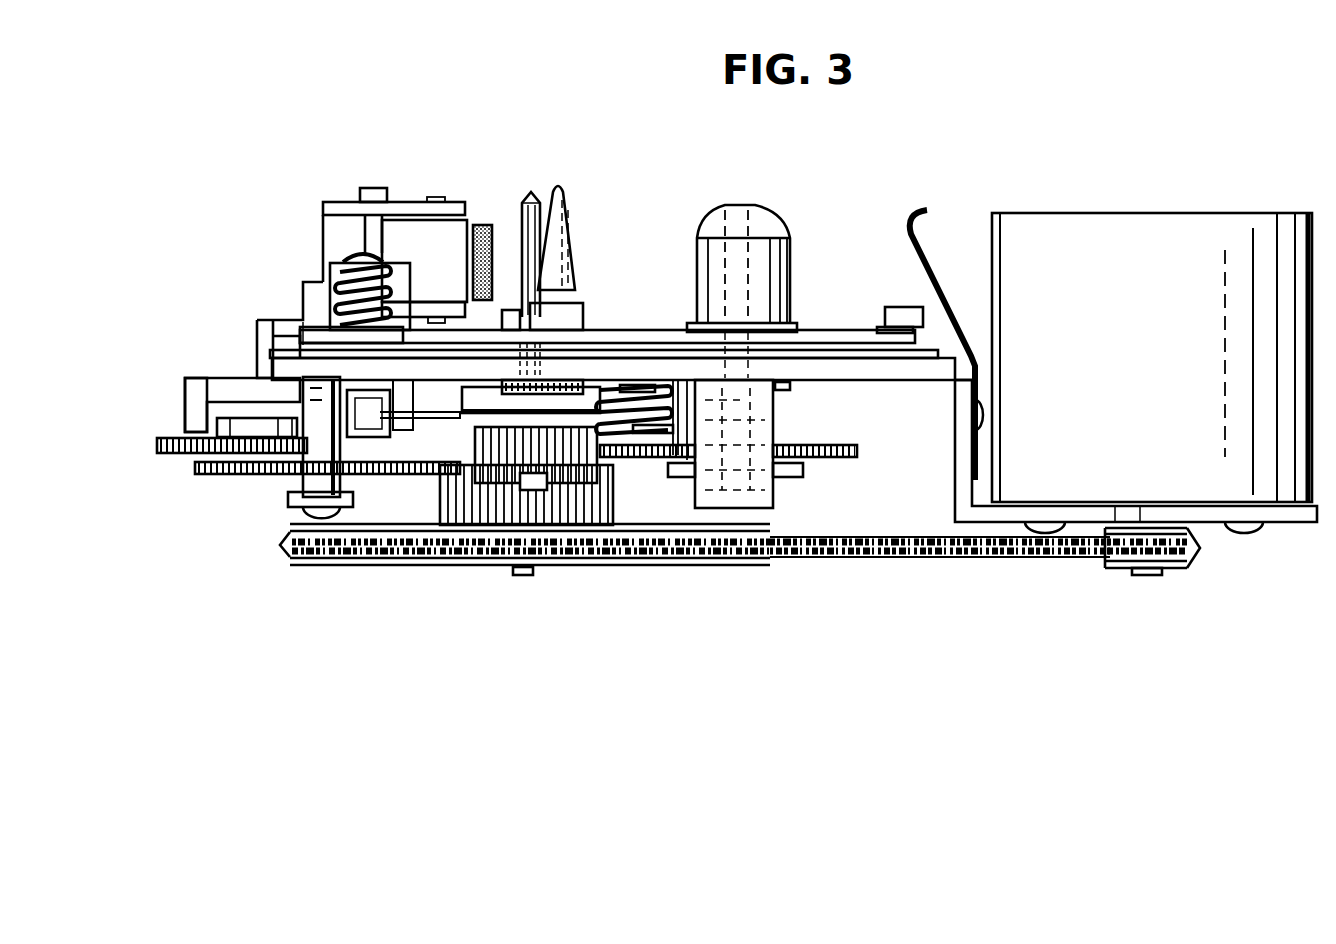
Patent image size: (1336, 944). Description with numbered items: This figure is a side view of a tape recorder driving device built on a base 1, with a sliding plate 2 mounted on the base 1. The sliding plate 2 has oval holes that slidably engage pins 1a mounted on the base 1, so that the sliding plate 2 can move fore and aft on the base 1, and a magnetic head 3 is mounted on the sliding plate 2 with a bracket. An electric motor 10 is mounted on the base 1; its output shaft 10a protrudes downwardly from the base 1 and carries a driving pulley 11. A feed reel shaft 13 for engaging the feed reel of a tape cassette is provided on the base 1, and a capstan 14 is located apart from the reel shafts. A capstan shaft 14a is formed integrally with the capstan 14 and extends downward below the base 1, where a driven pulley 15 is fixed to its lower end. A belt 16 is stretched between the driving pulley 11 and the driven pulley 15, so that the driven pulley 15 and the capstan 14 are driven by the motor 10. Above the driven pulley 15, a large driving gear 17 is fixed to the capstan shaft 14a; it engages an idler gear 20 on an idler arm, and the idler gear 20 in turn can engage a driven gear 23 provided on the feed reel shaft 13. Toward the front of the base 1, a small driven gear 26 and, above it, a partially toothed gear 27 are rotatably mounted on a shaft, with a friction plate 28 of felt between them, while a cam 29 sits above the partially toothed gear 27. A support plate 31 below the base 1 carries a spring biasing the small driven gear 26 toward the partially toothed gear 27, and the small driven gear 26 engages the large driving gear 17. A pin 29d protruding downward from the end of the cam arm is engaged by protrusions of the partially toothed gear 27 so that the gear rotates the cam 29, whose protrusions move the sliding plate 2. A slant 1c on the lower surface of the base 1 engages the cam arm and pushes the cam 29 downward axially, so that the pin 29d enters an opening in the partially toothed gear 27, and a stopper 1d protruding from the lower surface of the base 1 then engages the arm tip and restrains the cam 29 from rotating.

The base 1 is at (915, 375).
The pins 1a is at (881, 326).
The slant 1c is at (247, 350).
The stopper 1d is at (353, 388).
The sliding plate 2 is at (826, 340).
The magnetic head 3 is at (432, 233).
The electric motor 10 is at (1143, 232).
The output shaft 10a is at (1148, 575).
The driving pulley 11 is at (1185, 572).
The feed reel shaft 13 is at (705, 293).
The capstan 14 is at (568, 232).
The capstan shaft 14a is at (535, 300).
The driven pulley 15 is at (350, 568).
The belt 16 is at (808, 570).
The large driving gear 17 is at (490, 510).
The idler gear 20 is at (578, 485).
The driven gear 23 is at (835, 460).
The small driven gear 26 is at (218, 478).
The partially toothed gear 27 is at (178, 455).
The friction plate 28 is at (262, 478).
The cam 29 is at (232, 388).
The pin 29d is at (200, 407).
The support plate 31 is at (300, 505).